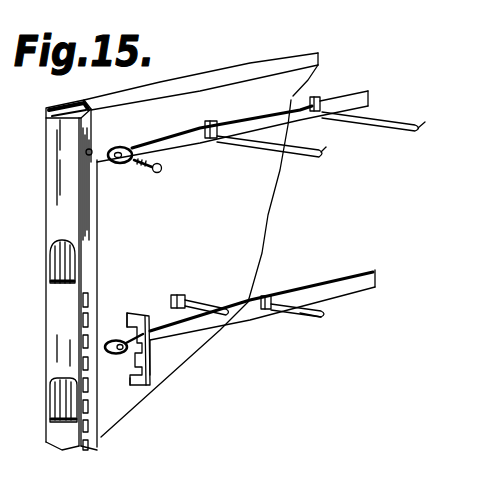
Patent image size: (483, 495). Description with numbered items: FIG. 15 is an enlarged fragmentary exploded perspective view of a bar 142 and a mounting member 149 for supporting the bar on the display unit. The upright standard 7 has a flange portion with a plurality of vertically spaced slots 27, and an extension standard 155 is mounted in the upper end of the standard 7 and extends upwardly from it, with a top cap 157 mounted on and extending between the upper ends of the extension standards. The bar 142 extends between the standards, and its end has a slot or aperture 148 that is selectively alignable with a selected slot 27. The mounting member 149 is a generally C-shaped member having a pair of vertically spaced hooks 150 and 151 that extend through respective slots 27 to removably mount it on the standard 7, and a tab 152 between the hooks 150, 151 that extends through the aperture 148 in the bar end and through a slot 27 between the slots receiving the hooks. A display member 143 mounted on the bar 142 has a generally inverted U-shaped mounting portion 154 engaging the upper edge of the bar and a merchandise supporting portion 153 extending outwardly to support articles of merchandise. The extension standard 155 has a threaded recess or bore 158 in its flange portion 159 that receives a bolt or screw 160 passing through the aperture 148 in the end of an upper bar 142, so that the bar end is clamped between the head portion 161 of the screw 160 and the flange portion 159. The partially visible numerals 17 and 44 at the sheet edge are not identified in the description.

The upright standard 7 is at (60, 358).
The post portion 17 is at (6, 211).
The slots 27 is at (83, 428).
The post portion 44 is at (9, 316).
The bar 142 is at (354, 93).
The display member 143 is at (287, 318).
The slot or aperture 148 is at (119, 148).
The mounting member 149 is at (153, 377).
The hook 150 is at (127, 314).
The hook 151 is at (130, 384).
The tab 152 is at (150, 365).
The merchandise supporting portion 153 is at (208, 310).
The mounting portion 154 is at (178, 296).
The extension standard 155 is at (50, 192).
The top cap 157 is at (219, 72).
The threaded recess or bore 158 is at (86, 152).
The flange portion 159 is at (96, 215).
The bolt or screw 160 is at (157, 168).
The head portion 161 is at (163, 166).